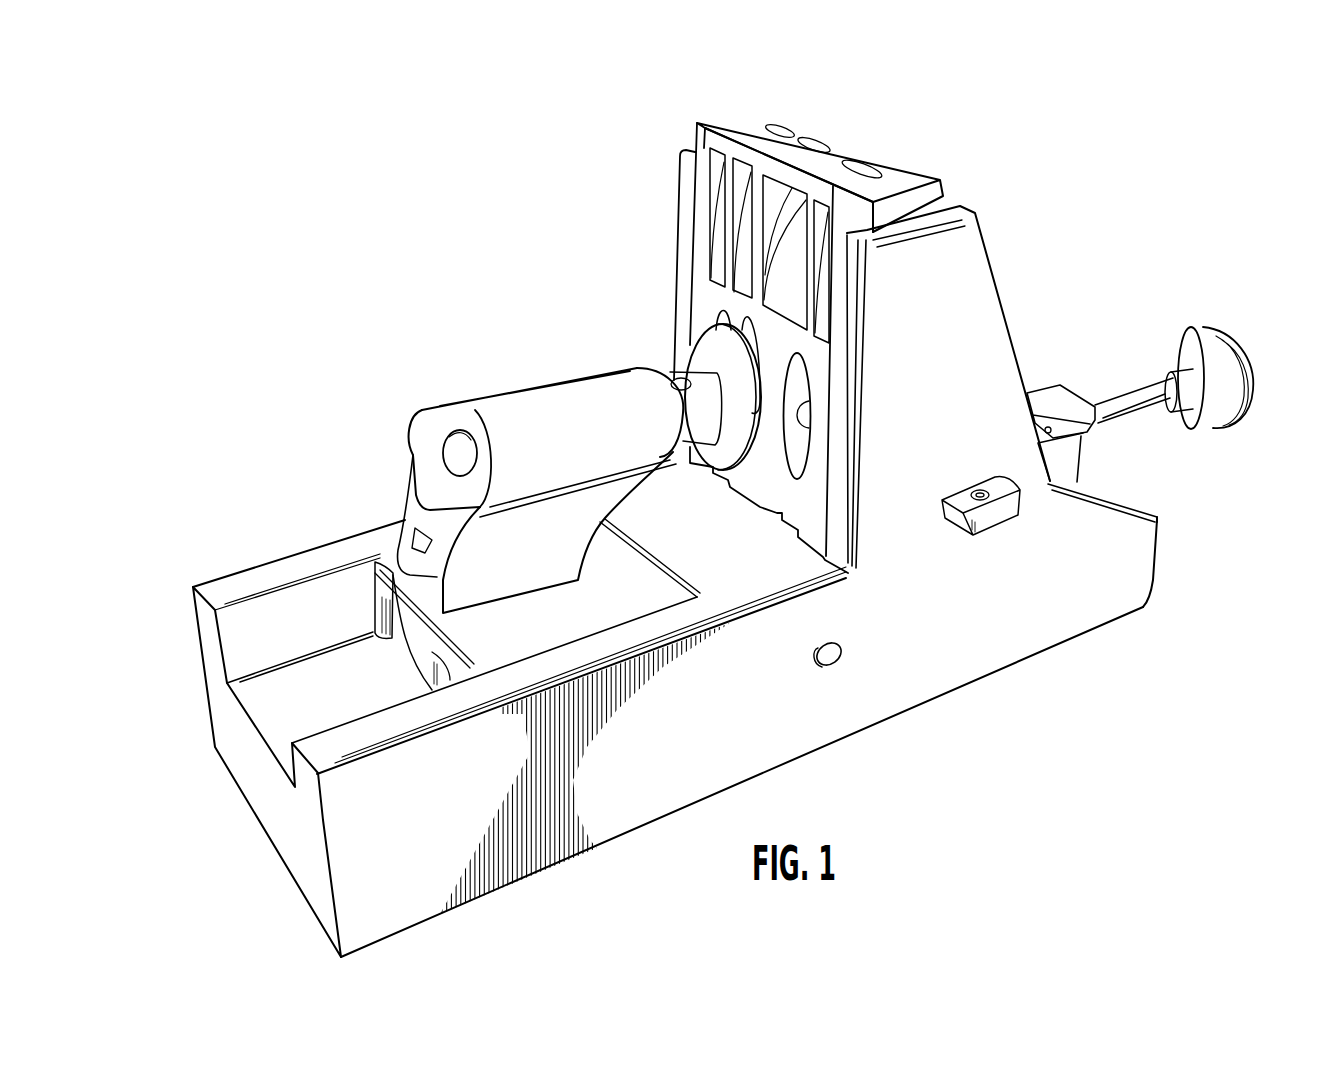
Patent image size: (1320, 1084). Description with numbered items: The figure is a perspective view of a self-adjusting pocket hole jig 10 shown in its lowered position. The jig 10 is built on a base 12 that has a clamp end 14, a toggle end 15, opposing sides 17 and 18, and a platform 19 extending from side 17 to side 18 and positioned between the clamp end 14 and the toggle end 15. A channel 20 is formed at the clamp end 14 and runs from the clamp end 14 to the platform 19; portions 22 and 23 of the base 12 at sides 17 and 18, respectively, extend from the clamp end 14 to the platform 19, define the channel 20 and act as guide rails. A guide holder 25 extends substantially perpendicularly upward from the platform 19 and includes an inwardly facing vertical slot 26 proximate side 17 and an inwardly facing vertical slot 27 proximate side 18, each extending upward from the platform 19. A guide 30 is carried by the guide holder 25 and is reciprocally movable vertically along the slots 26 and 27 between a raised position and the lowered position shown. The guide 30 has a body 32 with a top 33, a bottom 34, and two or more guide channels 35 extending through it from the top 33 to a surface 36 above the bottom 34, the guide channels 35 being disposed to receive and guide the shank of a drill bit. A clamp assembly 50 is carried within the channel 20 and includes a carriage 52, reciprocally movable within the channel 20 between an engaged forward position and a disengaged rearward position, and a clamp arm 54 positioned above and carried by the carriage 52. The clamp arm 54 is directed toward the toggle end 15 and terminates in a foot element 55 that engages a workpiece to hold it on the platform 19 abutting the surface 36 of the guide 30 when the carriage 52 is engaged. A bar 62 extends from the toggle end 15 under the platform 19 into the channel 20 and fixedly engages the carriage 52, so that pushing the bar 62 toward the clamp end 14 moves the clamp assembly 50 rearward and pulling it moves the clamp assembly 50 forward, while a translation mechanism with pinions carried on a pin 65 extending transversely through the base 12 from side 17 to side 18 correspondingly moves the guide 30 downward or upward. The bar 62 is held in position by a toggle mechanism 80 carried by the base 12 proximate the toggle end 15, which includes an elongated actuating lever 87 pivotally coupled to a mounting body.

The self-adjusting pocket hole jig 10 is at (555, 282).
The base 12 is at (710, 768).
The clamp end 14 is at (232, 725).
The toggle end 15 is at (1160, 527).
The side 17 is at (283, 555).
The side 18 is at (590, 806).
The platform 19 is at (745, 568).
The channel 20 is at (290, 660).
The portion of base 22 is at (340, 555).
The portion of base 23 is at (414, 723).
The guide holder 25 is at (963, 353).
The vertical slot 26 is at (690, 155).
The vertical slot 27 is at (977, 216).
The guide 30 is at (728, 116).
The body 32 is at (707, 218).
The top 33 is at (862, 182).
The bottom 34 is at (753, 507).
The guide channels 35 is at (860, 172).
The surface 36 is at (813, 465).
The clamp assembly 50 is at (475, 413).
The carriage 52 is at (435, 577).
The clamp arm 54 is at (533, 405).
The foot element 55 is at (690, 336).
The bar 62 is at (1150, 413).
The pin 65 is at (835, 657).
The toggle mechanism 80 is at (1088, 385).
The actuating lever 87 is at (1050, 166).